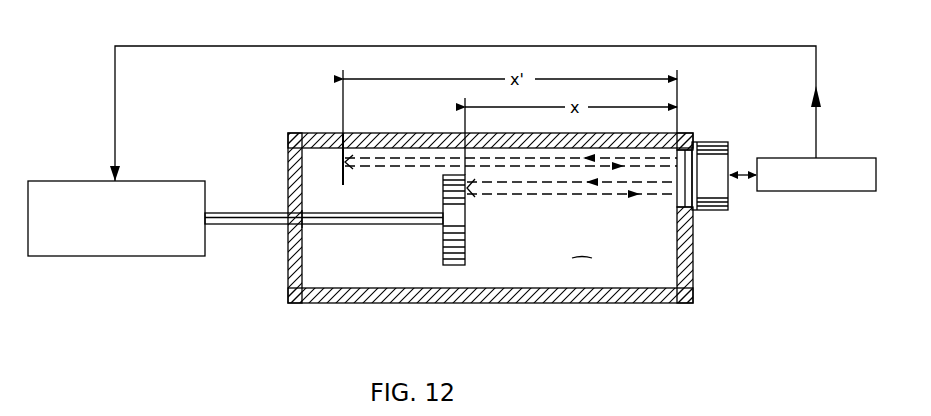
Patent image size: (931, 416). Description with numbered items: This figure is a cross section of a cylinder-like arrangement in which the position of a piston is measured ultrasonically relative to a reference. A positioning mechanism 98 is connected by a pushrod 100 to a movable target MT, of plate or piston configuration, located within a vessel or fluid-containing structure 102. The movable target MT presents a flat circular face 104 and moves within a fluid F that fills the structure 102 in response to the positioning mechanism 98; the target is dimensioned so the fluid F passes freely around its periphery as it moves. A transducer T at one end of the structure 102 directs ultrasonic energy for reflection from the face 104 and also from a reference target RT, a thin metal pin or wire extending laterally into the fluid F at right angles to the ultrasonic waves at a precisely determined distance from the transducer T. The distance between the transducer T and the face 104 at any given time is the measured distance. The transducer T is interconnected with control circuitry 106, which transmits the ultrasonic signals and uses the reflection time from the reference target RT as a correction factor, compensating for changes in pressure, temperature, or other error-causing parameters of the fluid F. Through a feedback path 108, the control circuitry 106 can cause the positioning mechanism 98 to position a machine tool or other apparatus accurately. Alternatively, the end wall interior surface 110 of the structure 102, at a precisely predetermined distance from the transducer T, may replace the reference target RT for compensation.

The positioning mechanism 98 is at (140, 181).
The pushrod 100 is at (250, 226).
The fluid-containing structure 102 is at (357, 303).
The flat circular face 104 is at (542, 221).
The control circuitry 106 is at (833, 191).
The feedback path 108 is at (732, 46).
The end wall interior surface 110 is at (300, 186).
The reference target RT is at (340, 133).
The movable target MT is at (447, 265).
The transducer T is at (705, 140).
The fluid F is at (582, 246).